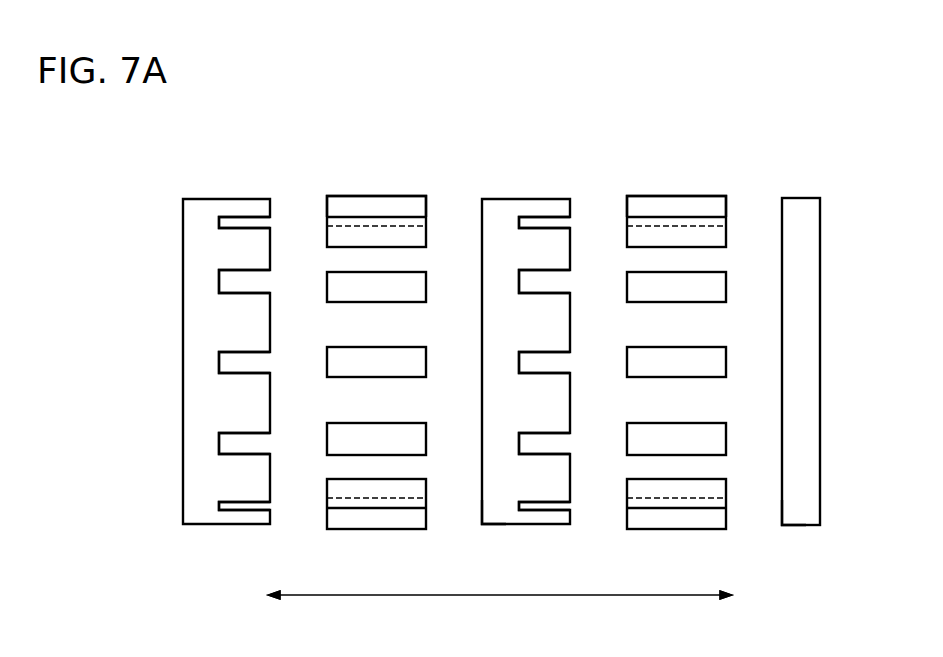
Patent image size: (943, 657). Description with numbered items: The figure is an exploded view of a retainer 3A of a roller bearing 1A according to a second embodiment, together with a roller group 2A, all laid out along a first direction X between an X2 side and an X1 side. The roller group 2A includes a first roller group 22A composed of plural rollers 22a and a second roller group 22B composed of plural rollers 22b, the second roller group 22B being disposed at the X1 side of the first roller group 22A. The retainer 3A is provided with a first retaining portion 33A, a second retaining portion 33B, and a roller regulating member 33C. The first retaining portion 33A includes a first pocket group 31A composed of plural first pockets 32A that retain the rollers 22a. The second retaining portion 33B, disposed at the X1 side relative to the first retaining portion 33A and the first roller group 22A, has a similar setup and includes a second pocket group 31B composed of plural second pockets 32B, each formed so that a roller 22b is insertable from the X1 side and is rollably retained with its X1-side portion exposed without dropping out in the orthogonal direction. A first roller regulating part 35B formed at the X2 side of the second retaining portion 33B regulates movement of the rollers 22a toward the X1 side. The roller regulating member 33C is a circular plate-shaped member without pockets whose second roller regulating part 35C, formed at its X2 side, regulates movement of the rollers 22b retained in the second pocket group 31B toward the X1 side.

The roller bearing 1A is at (769, 61).
The roller group 2A is at (423, 90).
The retainer 3A is at (613, 90).
The first roller group 22A is at (354, 167).
The roller 22a is at (404, 196).
The second roller group 22B is at (654, 167).
The roller 22b is at (703, 196).
The first pocket group 31A is at (149, 437).
The second pocket group 31B is at (449, 437).
The first pocket 32A is at (222, 282).
The second pocket 32B is at (522, 282).
The first retaining portion 33A is at (225, 167).
The second retaining portion 33B is at (524, 167).
The roller regulating member 33C is at (798, 167).
The first roller regulating part 35B is at (483, 516).
The second roller regulating part 35C is at (782, 515).
The first direction X is at (500, 597).
The X1 side X1 is at (721, 611).
The X2 side X2 is at (277, 611).